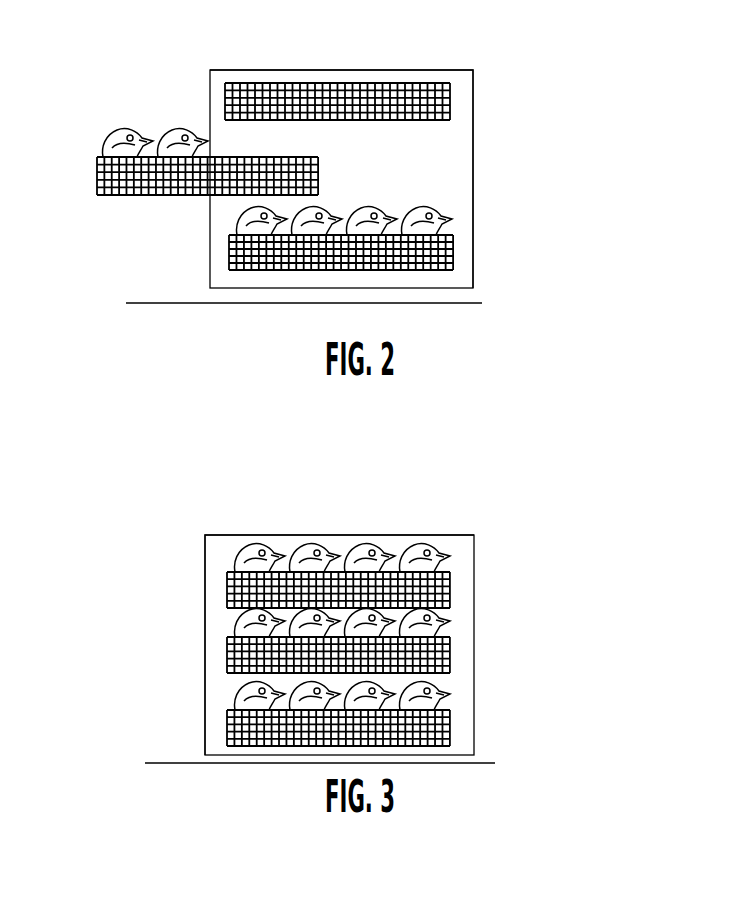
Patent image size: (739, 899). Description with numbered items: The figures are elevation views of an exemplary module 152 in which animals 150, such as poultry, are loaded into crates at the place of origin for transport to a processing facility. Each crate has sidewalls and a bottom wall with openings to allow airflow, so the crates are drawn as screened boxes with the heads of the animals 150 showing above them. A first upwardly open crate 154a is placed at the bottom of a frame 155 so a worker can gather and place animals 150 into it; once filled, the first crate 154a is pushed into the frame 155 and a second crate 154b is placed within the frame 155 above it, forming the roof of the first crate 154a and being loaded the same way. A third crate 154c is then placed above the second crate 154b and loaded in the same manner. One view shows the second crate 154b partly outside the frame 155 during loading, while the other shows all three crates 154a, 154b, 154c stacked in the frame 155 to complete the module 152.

In FIG. 2, the animals 150 is at (202, 238).
In FIG. 3, the animals 150 is at (400, 517).
In FIG. 2, the module 152 is at (399, 53).
In FIG. 3, the module 152 is at (338, 506).
In FIG. 2, the first crate 154a is at (453, 255).
In FIG. 3, the first crate 154a is at (227, 718).
In FIG. 2, the second crate 154b is at (97, 182).
In FIG. 3, the second crate 154b is at (227, 646).
In FIG. 2, the third crate 154c is at (450, 100).
In FIG. 3, the third crate 154c is at (450, 587).
In FIG. 2, the frame 155 is at (473, 70).
In FIG. 3, the frame 155 is at (250, 535).